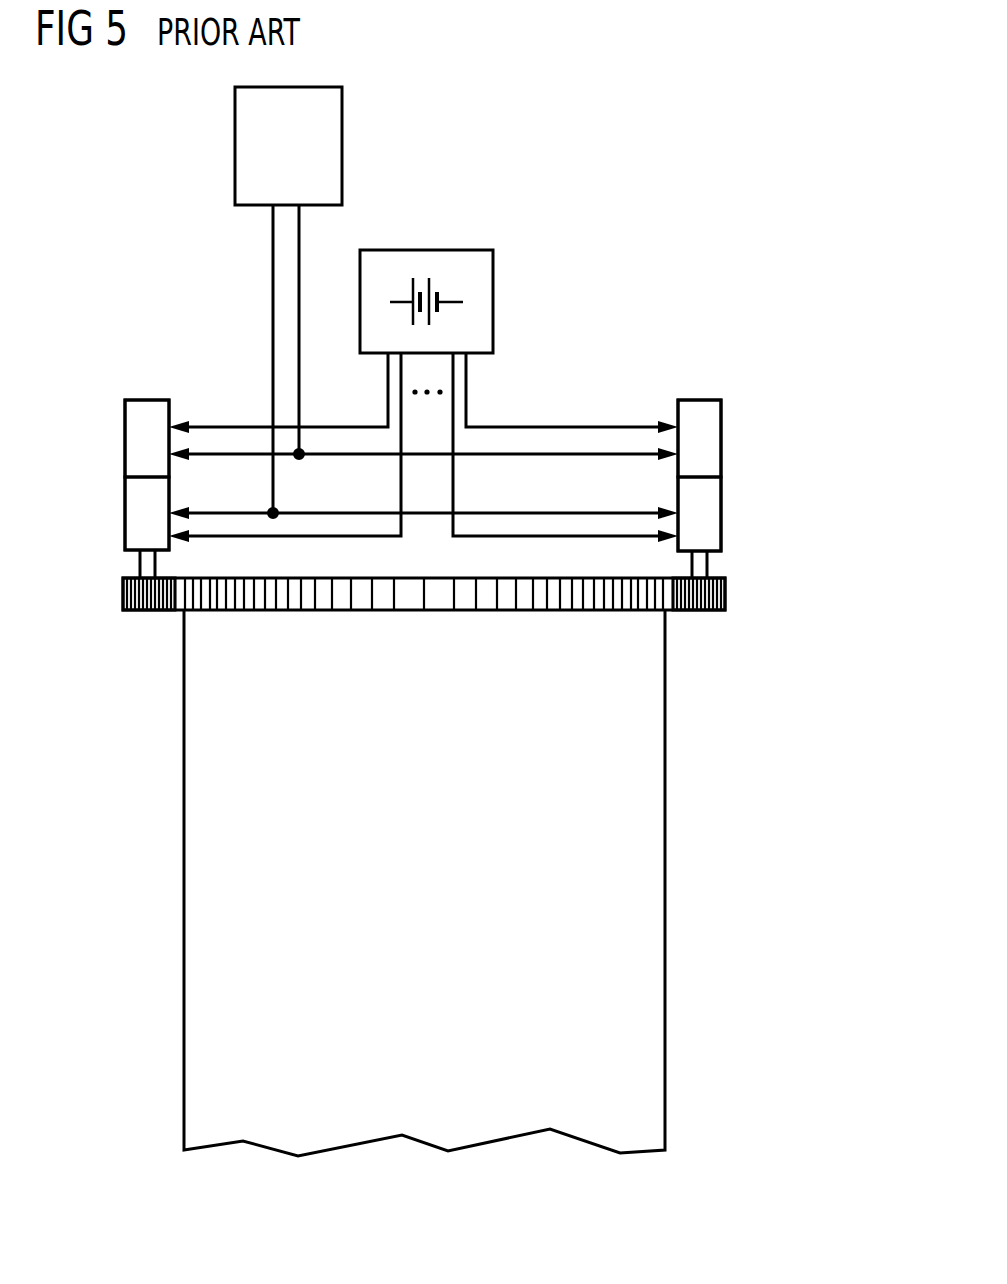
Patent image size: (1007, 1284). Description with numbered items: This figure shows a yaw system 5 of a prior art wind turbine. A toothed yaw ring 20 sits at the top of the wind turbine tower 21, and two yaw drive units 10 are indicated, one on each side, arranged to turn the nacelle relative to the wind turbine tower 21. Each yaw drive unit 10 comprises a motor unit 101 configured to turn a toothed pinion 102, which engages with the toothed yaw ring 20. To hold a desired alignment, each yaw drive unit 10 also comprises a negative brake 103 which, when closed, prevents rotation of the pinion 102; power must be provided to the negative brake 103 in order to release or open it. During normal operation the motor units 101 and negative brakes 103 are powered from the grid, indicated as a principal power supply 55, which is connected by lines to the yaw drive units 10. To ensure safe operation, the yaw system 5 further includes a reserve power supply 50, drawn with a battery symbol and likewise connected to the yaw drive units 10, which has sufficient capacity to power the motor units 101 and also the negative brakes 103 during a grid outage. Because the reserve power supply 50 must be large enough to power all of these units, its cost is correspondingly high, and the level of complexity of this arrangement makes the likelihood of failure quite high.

The yaw system 5 is at (622, 305).
The yaw drive unit 10 is at (128, 370).
The yaw ring 20 is at (408, 611).
The wind turbine tower 21 is at (666, 733).
The reserve power supply 50 is at (493, 300).
The principal power supply 55 is at (342, 137).
The motor unit 101 is at (125, 512).
The toothed pinion 102 is at (124, 593).
The negative brake 103 is at (125, 437).